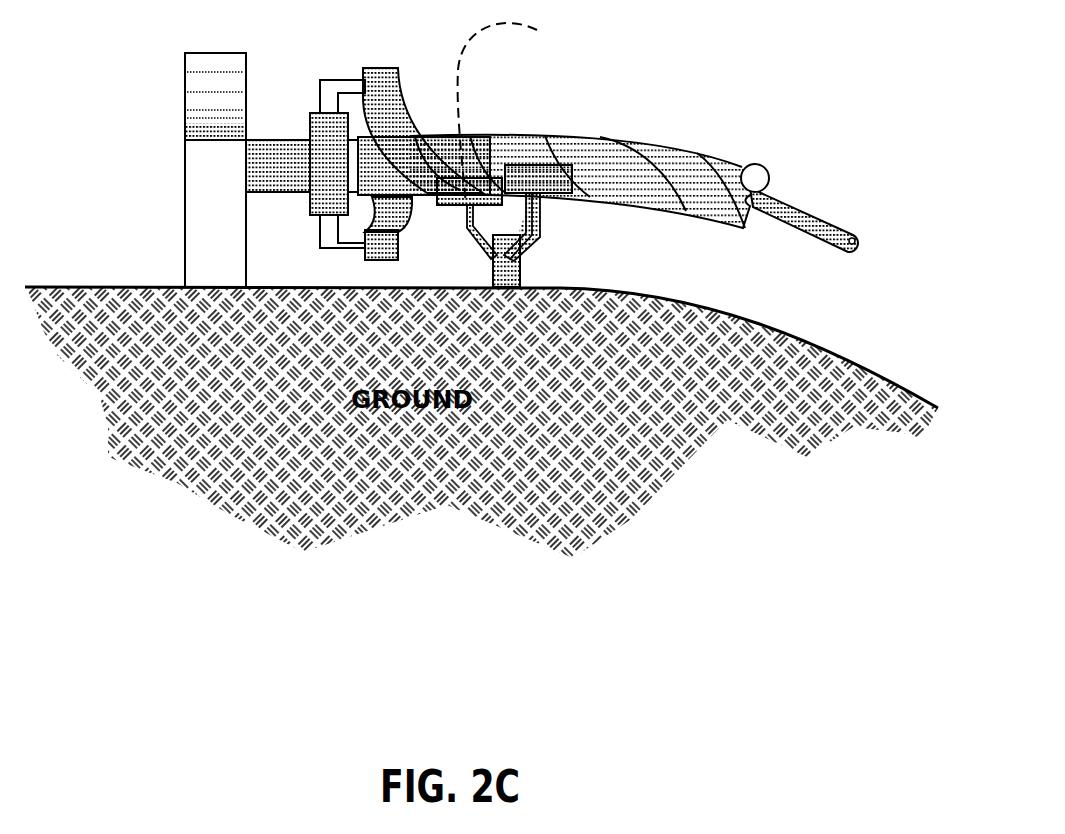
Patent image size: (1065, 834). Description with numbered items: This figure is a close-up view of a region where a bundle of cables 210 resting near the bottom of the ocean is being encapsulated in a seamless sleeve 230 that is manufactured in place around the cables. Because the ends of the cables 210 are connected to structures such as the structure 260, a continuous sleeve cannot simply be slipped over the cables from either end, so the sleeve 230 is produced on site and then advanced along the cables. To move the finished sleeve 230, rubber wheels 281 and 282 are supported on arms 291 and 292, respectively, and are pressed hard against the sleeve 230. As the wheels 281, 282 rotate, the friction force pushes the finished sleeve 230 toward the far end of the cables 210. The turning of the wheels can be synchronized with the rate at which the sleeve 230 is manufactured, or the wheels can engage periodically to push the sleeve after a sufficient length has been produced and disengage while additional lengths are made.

The bundle of cables 210 is at (785, 202).
The sleeve 230 is at (617, 137).
The structure 260 is at (213, 228).
The rubber wheel 281 is at (536, 183).
The rubber wheel 282 is at (527, 114).
The arm 291 is at (543, 240).
The arm 292 is at (463, 223).